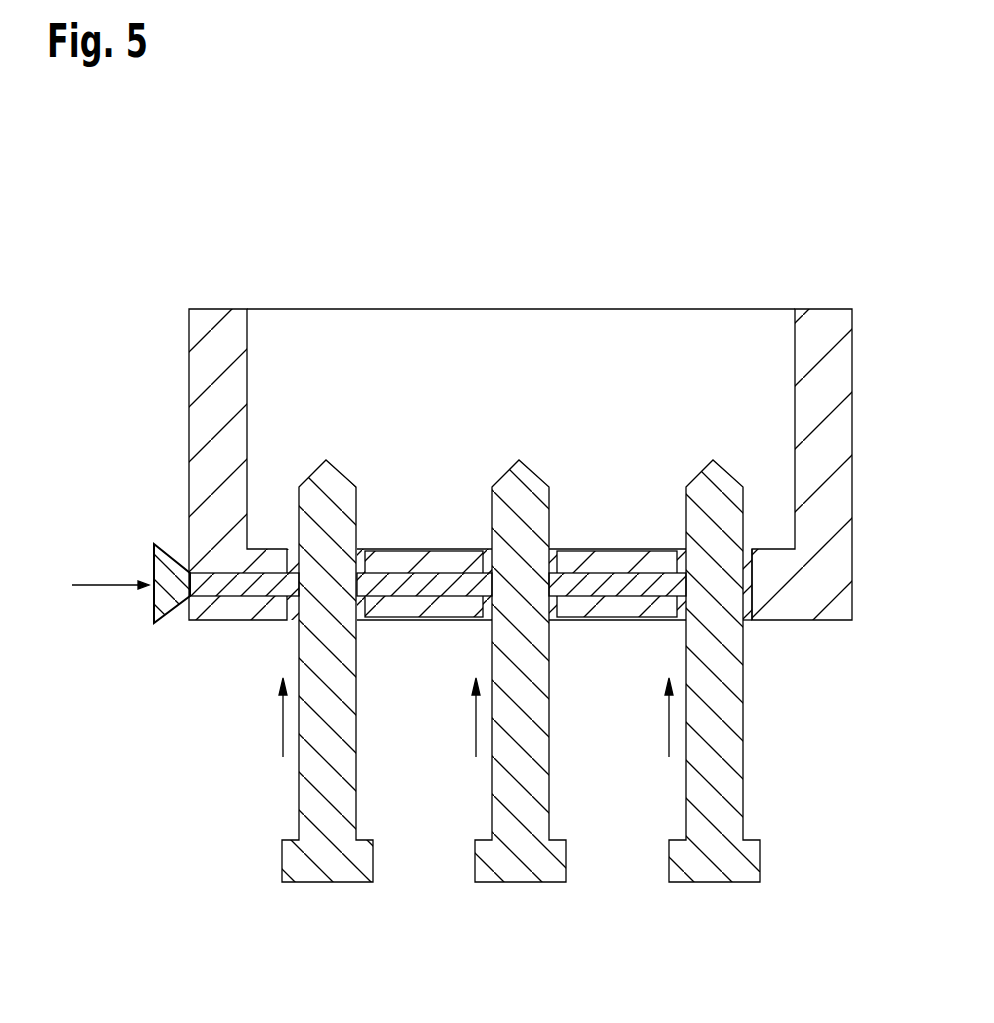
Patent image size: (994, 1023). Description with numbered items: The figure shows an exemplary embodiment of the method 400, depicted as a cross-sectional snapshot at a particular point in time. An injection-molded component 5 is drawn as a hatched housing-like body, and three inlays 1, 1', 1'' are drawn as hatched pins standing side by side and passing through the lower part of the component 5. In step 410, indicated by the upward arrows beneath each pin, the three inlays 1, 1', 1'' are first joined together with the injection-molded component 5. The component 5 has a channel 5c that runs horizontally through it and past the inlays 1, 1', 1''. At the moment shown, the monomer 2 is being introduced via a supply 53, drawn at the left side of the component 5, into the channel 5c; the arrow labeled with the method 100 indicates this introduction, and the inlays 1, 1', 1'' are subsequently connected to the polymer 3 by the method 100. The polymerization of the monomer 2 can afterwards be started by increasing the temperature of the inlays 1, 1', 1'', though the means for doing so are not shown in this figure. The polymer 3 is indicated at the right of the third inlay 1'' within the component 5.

The method 400 is at (651, 134).
The injection-molded component 5 is at (207, 360).
The channel 5c is at (233, 572).
The supply 53 is at (150, 571).
The method 100 is at (84, 582).
The monomer 2 is at (100, 590).
The inlay 1 is at (327, 637).
The inlay 1' is at (520, 636).
The inlay 1'' is at (714, 636).
The polymer 3 is at (748, 622).
The step 410 is at (283, 720).